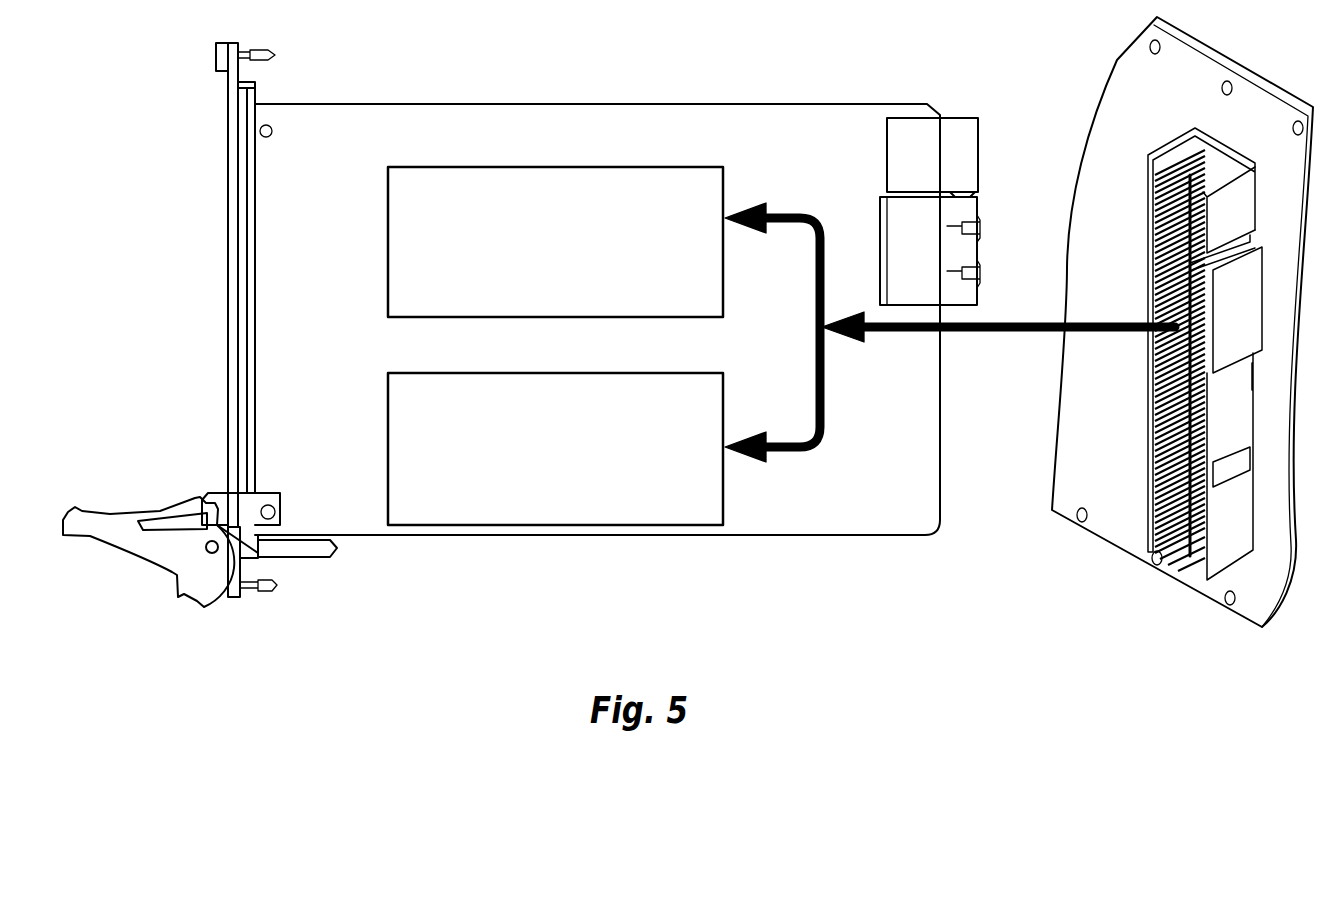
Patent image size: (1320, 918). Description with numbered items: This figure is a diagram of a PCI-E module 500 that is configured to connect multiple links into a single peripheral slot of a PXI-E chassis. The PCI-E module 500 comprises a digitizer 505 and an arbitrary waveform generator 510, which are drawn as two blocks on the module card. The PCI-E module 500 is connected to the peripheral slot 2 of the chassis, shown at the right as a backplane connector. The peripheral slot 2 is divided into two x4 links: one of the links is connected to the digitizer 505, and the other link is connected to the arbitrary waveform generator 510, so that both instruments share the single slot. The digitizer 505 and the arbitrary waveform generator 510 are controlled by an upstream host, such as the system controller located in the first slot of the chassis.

The PCI-E module 500 is at (722, 112).
The digitizer 505 is at (388, 192).
The arbitrary waveform generator 510 is at (388, 440).
The peripheral slot 2 is at (1187, 557).